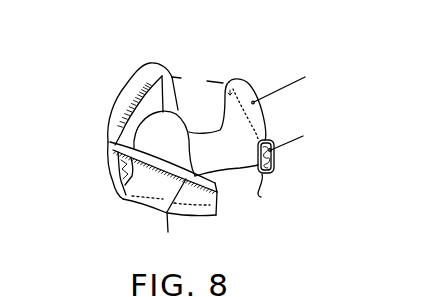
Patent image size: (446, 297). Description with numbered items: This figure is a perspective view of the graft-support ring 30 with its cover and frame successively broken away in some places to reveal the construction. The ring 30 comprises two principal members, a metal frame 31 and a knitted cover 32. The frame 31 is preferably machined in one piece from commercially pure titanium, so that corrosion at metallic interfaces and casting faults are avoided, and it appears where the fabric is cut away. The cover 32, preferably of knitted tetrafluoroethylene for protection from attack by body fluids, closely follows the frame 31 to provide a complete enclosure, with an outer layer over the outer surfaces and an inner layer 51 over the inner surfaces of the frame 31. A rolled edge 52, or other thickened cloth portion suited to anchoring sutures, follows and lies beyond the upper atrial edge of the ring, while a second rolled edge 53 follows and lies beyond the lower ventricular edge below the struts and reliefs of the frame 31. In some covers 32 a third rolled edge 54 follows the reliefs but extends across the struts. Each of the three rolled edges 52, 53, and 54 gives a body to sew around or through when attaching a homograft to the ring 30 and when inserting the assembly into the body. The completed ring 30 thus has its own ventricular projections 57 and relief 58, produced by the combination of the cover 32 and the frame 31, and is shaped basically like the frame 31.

The graft-support ring 30 is at (133, 69).
The metal frame 31 is at (108, 152).
The knitted cover 32 is at (179, 144).
The inner layer 51 is at (216, 215).
The rolled edge 52 is at (190, 216).
The second rolled edge 53 is at (182, 42).
The third rolled edge 54 is at (167, 229).
The ventricular projections 57 is at (197, 80).
The relief 58 is at (108, 131).